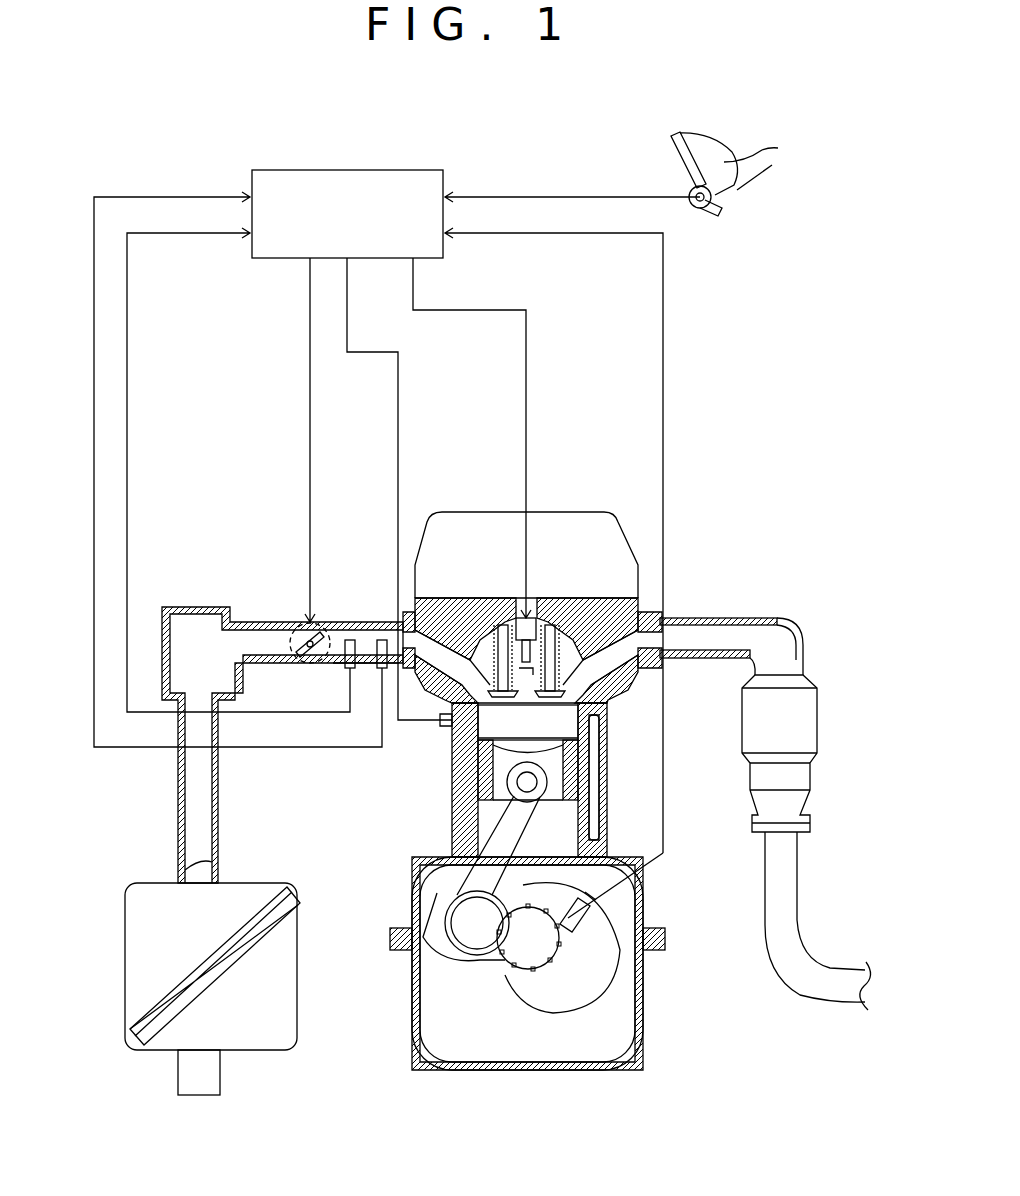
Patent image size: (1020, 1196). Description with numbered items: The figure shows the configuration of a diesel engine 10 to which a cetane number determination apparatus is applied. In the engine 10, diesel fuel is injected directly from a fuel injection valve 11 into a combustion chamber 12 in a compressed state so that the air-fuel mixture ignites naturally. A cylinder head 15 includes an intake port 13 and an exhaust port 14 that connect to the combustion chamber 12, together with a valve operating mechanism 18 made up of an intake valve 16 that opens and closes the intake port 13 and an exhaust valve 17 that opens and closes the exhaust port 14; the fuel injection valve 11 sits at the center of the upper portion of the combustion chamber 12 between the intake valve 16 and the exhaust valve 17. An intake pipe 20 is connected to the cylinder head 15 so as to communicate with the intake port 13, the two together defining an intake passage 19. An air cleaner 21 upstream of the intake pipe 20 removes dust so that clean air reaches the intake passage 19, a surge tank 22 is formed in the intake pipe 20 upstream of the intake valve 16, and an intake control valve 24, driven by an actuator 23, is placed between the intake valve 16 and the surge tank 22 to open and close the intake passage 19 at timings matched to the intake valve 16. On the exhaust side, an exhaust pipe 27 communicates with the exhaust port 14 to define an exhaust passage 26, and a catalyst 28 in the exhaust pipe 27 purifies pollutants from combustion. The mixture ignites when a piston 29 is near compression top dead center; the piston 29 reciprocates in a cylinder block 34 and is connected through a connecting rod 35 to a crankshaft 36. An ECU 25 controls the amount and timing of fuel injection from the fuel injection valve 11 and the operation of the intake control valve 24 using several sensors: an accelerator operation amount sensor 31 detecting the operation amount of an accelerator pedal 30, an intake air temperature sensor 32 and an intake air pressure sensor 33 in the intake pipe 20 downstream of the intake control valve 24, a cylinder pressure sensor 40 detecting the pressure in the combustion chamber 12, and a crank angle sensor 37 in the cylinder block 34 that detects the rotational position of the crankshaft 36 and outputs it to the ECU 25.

The engine 10 is at (383, 1031).
The fuel injection valve 11 is at (535, 616).
The combustion chamber 12 is at (575, 727).
The intake port 13 is at (455, 642).
The exhaust port 14 is at (612, 640).
The cylinder head 15 is at (576, 526).
The intake valve 16 is at (504, 690).
The exhaust valve 17 is at (549, 690).
The valve operating mechanism 18 is at (478, 526).
The intake passage 19 is at (358, 638).
The intake pipe 20 is at (218, 805).
The air cleaner 21 is at (285, 900).
The surge tank 22 is at (212, 625).
The actuator 23 is at (298, 625).
The intake control valve 24 is at (320, 655).
The ECU 25 is at (349, 170).
The exhaust passage 26 is at (688, 632).
The exhaust pipe 27 is at (693, 662).
The catalyst 28 is at (805, 714).
The piston 29 is at (598, 790).
The accelerator pedal 30 is at (676, 140).
The accelerator operation amount sensor 31 is at (705, 210).
The intake air temperature sensor 32 is at (350, 640).
The intake air pressure sensor 33 is at (382, 640).
The cylinder block 34 is at (425, 868).
The connecting rod 35 is at (512, 845).
The crankshaft 36 is at (528, 958).
The crank angle sensor 37 is at (575, 925).
The cylinder pressure sensor 40 is at (450, 722).